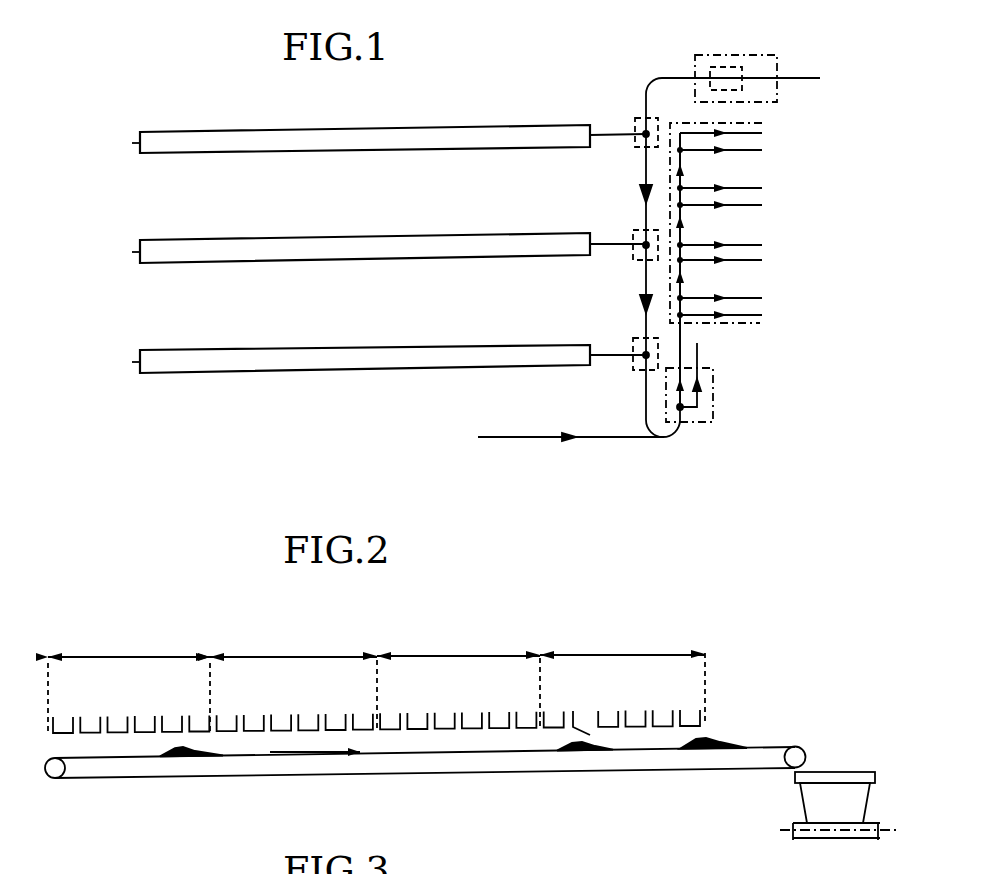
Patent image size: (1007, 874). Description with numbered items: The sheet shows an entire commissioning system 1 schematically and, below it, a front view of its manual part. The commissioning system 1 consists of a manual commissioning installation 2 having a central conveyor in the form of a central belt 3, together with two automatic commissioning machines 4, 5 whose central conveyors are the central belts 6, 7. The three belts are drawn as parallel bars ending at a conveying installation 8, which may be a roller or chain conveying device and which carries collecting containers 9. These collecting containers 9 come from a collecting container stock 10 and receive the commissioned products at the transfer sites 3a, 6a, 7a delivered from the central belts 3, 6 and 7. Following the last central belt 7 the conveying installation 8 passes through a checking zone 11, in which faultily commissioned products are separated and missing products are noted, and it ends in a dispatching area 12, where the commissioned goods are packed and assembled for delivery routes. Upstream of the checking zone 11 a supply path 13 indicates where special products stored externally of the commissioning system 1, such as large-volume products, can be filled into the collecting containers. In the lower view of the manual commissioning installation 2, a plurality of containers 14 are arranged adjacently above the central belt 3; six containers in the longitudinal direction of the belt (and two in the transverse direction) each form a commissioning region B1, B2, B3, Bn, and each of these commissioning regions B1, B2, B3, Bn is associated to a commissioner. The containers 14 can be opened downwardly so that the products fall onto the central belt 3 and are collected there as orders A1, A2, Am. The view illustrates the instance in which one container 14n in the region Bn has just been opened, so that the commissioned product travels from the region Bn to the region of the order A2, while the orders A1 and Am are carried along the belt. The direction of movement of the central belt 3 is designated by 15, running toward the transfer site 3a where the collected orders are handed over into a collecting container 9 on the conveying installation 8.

In FIG. 1, the commissioning system 1 is at (452, 98).
In FIG. 1, the manual commissioning installation 2 is at (361, 145).
In FIG. 2, the manual commissioning installation 2 is at (200, 632).
In FIG. 1, the central belt 3 is at (310, 138).
In FIG. 2, the central belt 3 is at (743, 770).
In FIG. 1, the transfer site 3a is at (644, 132).
In FIG. 2, the transfer site 3a is at (812, 760).
In FIG. 1, the automatic commissioning machine 4 is at (360, 258).
In FIG. 1, the automatic commissioning machine 5 is at (361, 371).
In FIG. 1, the central belt 6 is at (310, 248).
In FIG. 1, the transfer site 6a is at (644, 243).
In FIG. 1, the central belt 7 is at (313, 362).
In FIG. 1, the transfer site 7a is at (644, 353).
In FIG. 1, the conveying installation 8 is at (635, 283).
In FIG. 2, the conveying installation 8 is at (788, 843).
In FIG. 1, the collecting container 9 is at (730, 67).
In FIG. 2, the collecting container 9 is at (810, 792).
In FIG. 1, the collecting container stock 10 is at (692, 60).
In FIG. 1, the checking zone 11 is at (712, 383).
In FIG. 1, the dispatching area 12 is at (712, 327).
In FIG. 1, the supply path 13 is at (540, 438).
In FIG. 2, the container 14 is at (360, 713).
In FIG. 2, the container 14n is at (577, 716).
In FIG. 2, the direction of movement 15 is at (312, 754).
In FIG. 2, the order A1 is at (700, 753).
In FIG. 2, the order A2 is at (584, 752).
In FIG. 2, the order Am is at (185, 760).
In FIG. 2, the commissioning region B1 is at (130, 664).
In FIG. 2, the commissioning region B2 is at (268, 662).
In FIG. 2, the commissioning region B3 is at (468, 661).
In FIG. 2, the commissioning region Bn is at (641, 660).